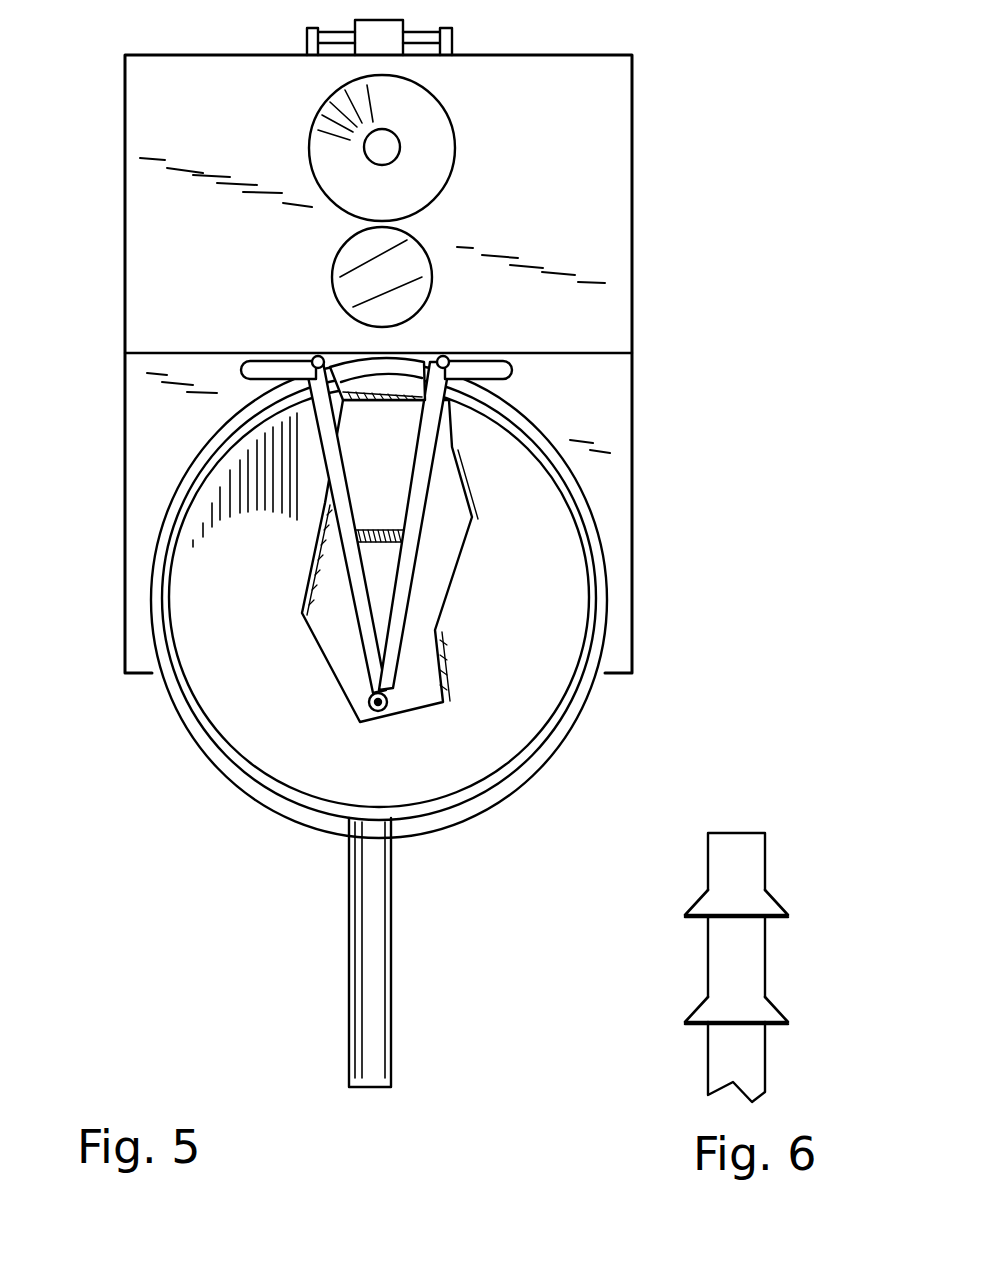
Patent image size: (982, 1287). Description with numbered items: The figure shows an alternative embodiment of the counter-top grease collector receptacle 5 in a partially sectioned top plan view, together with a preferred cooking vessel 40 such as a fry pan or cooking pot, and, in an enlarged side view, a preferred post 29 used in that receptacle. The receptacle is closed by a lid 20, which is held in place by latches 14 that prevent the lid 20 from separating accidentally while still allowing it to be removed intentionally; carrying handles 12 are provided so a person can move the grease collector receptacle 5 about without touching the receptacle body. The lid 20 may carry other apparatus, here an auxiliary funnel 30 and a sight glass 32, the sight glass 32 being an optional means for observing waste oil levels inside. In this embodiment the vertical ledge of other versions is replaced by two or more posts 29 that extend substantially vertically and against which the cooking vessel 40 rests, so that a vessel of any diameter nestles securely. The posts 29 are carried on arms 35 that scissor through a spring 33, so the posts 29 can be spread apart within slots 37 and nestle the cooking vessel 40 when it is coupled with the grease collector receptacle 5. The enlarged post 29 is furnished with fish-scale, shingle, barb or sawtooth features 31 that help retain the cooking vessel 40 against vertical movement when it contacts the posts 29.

In FIG. 5, the counter-top grease collector receptacle 5 is at (97, 93).
In FIG. 5, the carrying handle 12 is at (447, 52).
In FIG. 5, the latch 14 is at (367, 30).
In FIG. 5, the lid 20 is at (271, 252).
In FIG. 5, the post 29 is at (453, 360).
In FIG. 6, the post 29 is at (735, 840).
In FIG. 5, the auxiliary funnel 30 is at (399, 201).
In FIG. 6, the retaining feature 31 is at (700, 1015).
In FIG. 5, the sight glass 32 is at (399, 289).
In FIG. 5, the spring 33 is at (405, 530).
In FIG. 5, the arm 35 is at (400, 578).
In FIG. 5, the slot 37 is at (263, 362).
In FIG. 5, the cooking vessel 40 is at (564, 616).